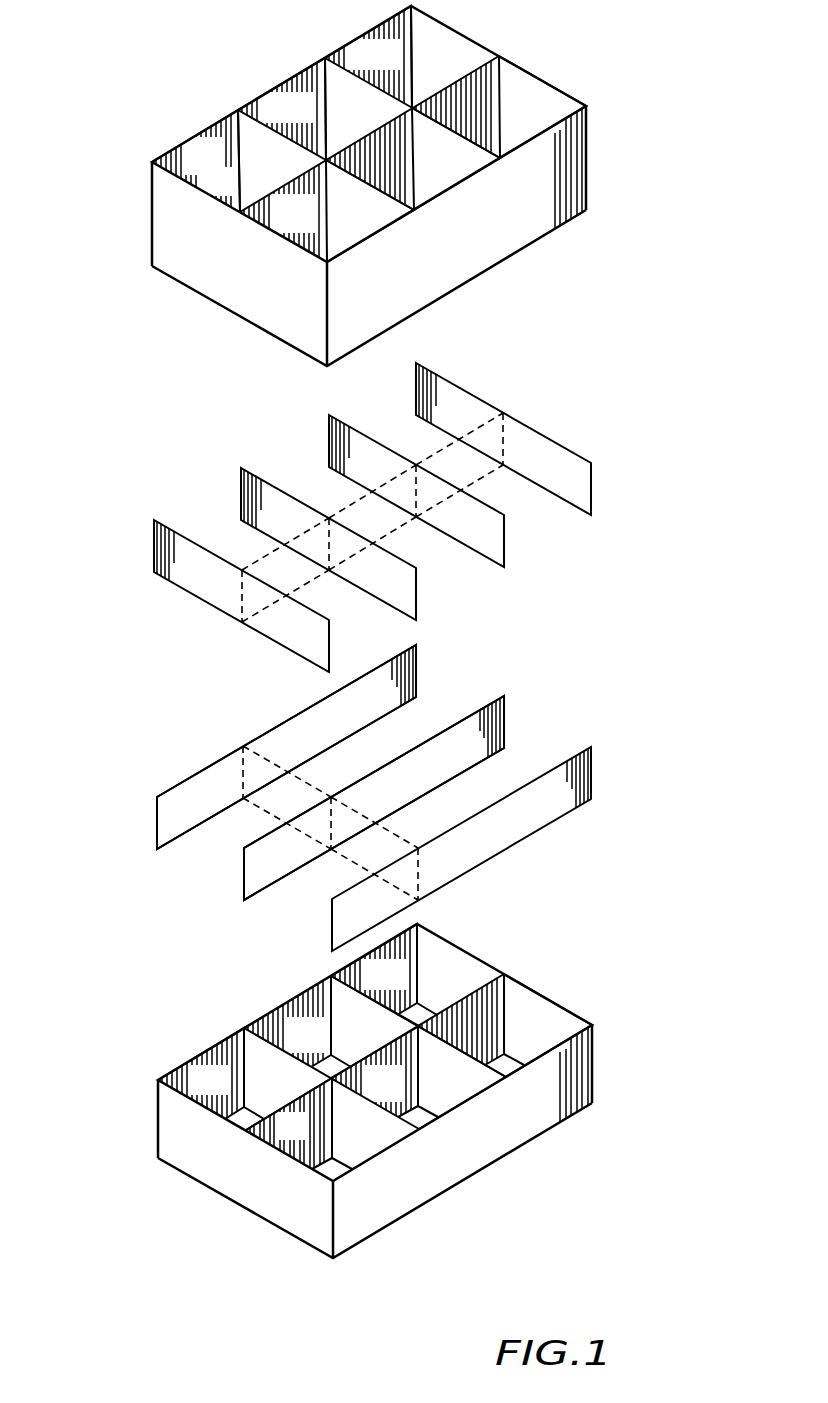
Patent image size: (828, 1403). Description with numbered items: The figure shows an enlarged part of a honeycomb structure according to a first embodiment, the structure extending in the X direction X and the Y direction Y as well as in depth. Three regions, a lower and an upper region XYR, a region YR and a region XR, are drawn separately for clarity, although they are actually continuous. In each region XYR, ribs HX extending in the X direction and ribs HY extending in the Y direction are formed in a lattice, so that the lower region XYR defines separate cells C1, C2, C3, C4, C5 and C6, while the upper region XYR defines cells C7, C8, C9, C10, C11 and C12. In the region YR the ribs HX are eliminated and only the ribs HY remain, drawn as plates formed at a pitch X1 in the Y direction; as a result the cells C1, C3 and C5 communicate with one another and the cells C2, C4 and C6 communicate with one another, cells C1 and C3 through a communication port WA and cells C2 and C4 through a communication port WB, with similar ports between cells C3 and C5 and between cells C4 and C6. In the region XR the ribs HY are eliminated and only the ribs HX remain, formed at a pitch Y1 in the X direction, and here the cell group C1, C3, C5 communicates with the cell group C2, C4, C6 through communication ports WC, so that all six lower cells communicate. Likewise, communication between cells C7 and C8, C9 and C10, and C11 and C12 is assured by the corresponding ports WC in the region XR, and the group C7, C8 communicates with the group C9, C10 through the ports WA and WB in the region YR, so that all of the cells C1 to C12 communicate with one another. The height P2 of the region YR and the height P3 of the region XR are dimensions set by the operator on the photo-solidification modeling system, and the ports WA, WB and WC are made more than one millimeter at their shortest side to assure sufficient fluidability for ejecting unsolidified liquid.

The cell C1 is at (289, 1118).
The cell C2 is at (201, 1067).
The cell C3 is at (462, 1077).
The cell C4 is at (375, 1027).
The cell C5 is at (548, 1025).
The cell C6 is at (374, 963).
The cell C7 is at (370, 211).
The cell C8 is at (196, 161).
The cell C9 is at (456, 159).
The cell C10 is at (282, 109).
The cell C11 is at (542, 107).
The cell C12 is at (368, 57).
The rib extending in the X direction HX is at (320, 648).
The rib extending in the Y direction HY is at (285, 763).
The communication port WA is at (374, 813).
The communication port WB is at (286, 761).
The communication port WC is at (322, 576).
The region XR is at (652, 452).
The region YR is at (652, 735).
The region XYR is at (652, 105).
The height of the YR region P2 is at (69, 817).
The height of the XR region P3 is at (90, 450).
The pitch in the Y direction X1 is at (518, 666).
The pitch in the X direction Y1 is at (236, 462).
The X direction X is at (157, 643).
The Y direction Y is at (145, 930).